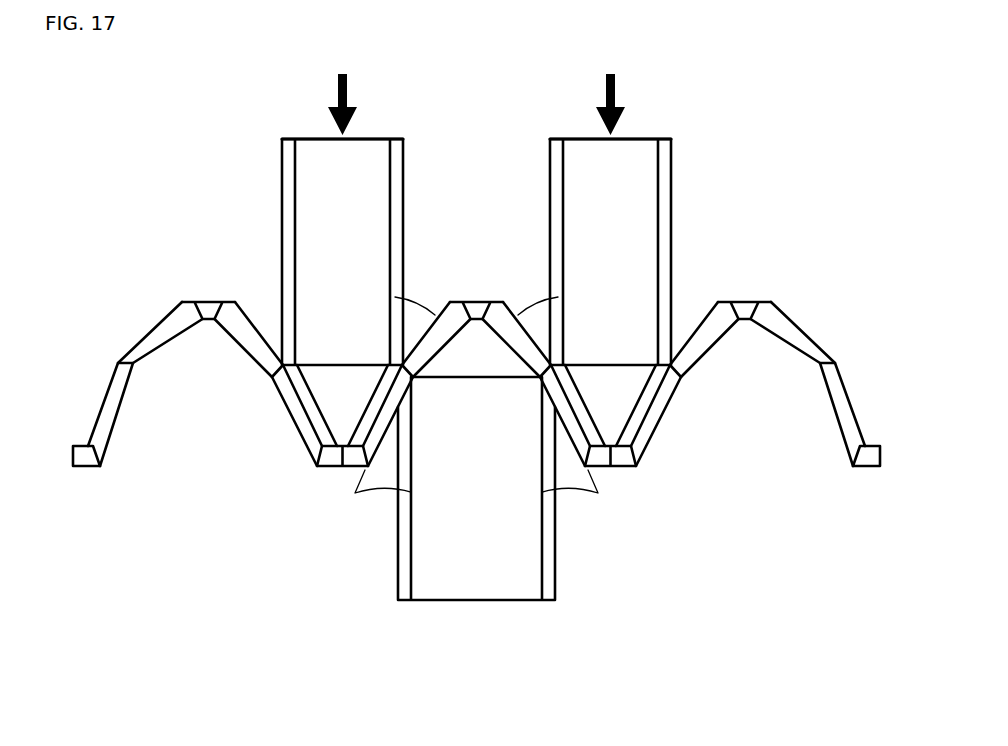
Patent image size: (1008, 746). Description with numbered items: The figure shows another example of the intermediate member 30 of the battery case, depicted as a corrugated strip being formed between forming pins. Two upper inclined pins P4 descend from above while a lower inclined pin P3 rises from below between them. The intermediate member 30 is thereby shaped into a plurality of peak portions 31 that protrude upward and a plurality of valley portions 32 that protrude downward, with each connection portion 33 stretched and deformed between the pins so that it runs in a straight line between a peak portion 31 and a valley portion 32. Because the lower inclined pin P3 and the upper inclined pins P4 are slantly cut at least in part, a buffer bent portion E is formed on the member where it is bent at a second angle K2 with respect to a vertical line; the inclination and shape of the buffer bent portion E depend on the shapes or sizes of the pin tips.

The intermediate member 30 is at (463, 340).
The peak portion 31 is at (210, 301).
The valley portion 32 is at (87, 446).
The connection portion 33 is at (142, 377).
The buffer bent portion E is at (122, 363).
The lower inclined pin P3 is at (402, 545).
The upper inclined pin P4 is at (284, 181).
The second angle K2 is at (476, 400).